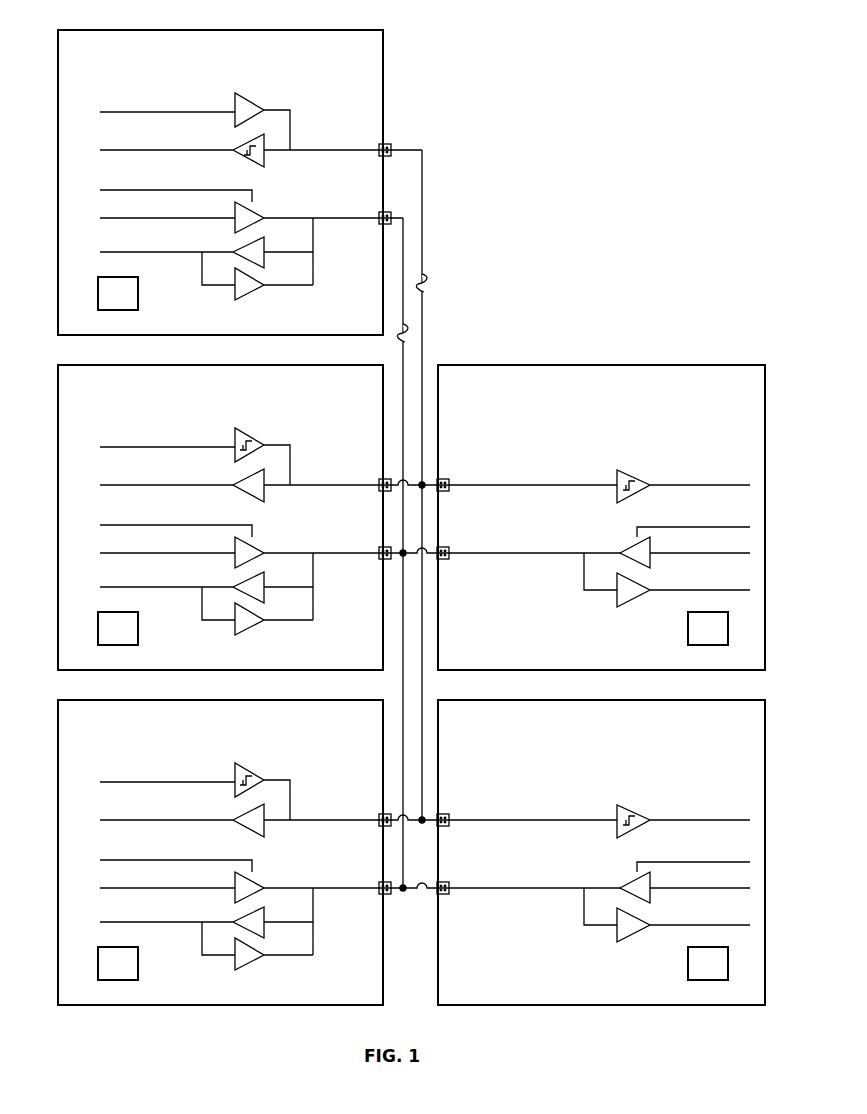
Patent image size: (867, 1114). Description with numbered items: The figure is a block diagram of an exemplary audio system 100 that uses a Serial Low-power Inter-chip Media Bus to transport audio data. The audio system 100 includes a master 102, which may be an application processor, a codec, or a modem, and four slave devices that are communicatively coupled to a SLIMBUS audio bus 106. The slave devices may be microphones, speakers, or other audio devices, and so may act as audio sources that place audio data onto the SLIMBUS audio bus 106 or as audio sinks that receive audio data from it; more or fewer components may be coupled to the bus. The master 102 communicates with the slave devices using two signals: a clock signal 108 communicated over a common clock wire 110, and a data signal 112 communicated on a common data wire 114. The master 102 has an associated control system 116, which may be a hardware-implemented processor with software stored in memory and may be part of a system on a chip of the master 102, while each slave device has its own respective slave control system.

The audio system 100 is at (580, 159).
The master 102 is at (355, 61).
The SLIMBUS audio bus 106 is at (418, 82).
The clock signal 108 is at (435, 280).
The common clock wire 110 is at (422, 183).
The data signal 112 is at (417, 330).
The common data wire 114 is at (403, 673).
The control system 116 is at (138, 293).